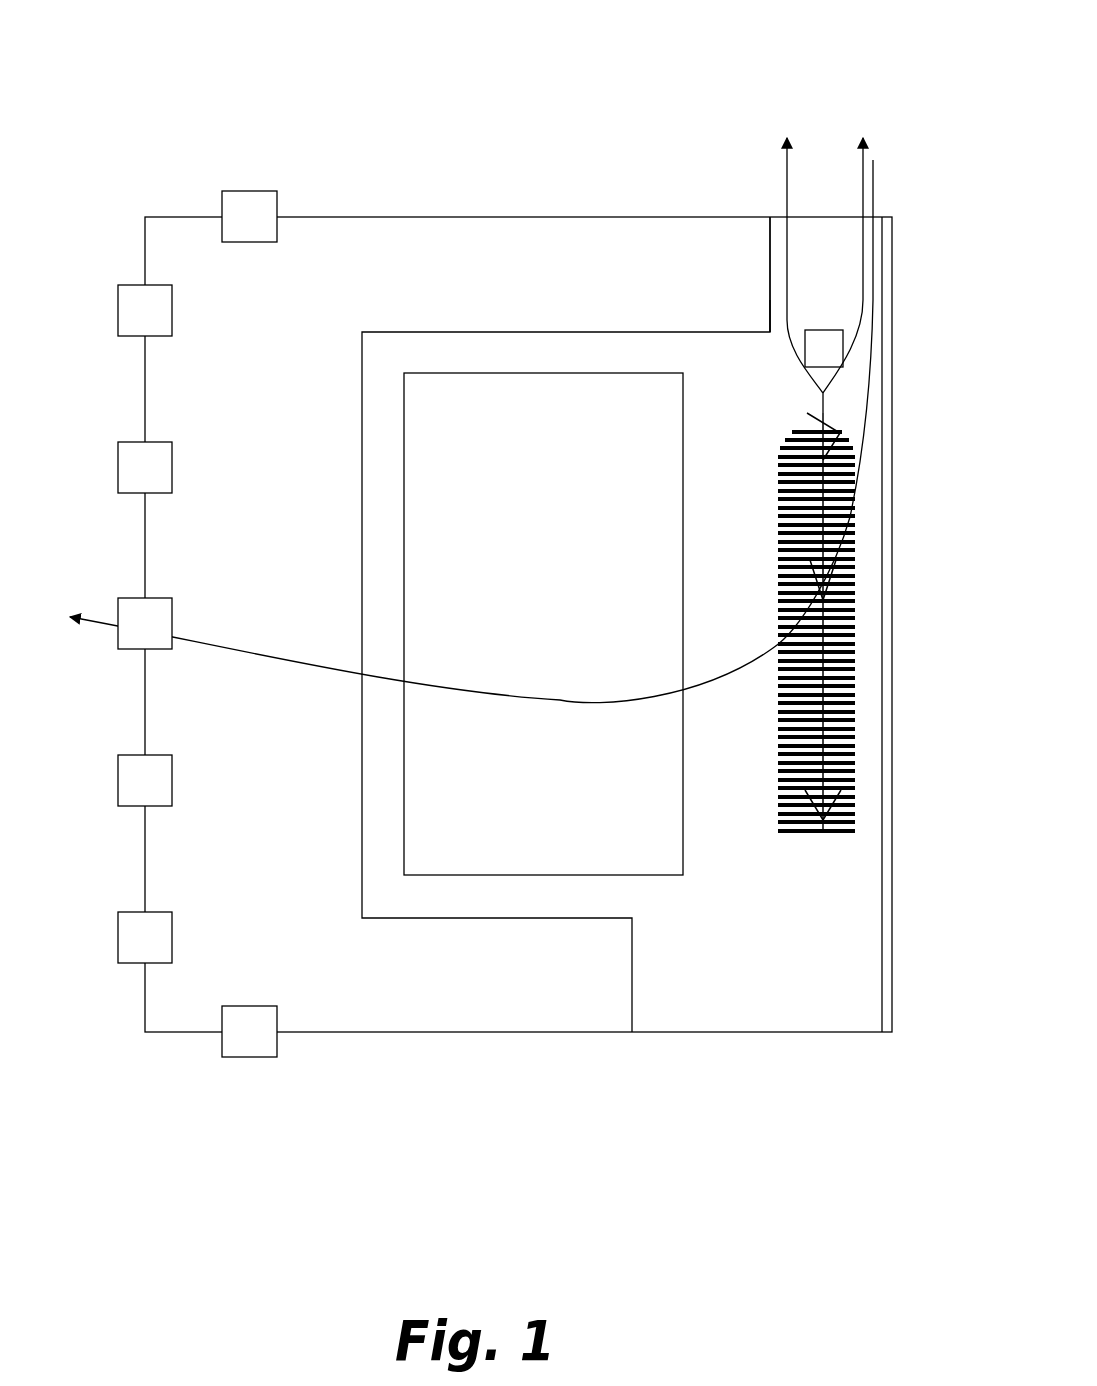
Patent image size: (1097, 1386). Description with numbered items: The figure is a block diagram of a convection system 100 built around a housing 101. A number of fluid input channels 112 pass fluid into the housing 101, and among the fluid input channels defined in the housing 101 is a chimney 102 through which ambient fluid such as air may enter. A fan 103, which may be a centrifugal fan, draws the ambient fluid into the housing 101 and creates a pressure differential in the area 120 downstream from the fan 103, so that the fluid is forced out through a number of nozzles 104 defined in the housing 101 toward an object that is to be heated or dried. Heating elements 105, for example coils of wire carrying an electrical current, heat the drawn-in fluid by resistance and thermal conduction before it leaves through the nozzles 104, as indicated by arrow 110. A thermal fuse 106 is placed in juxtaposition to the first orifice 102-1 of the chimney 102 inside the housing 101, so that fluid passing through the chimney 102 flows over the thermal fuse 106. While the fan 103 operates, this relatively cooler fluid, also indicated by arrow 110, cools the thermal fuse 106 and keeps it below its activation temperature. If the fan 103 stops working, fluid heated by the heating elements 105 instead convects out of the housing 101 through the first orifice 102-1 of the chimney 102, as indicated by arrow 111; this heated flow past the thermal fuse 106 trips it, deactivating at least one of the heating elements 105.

The convection system 100 is at (188, 98).
The housing 101 is at (462, 213).
The chimney 102 is at (813, 235).
The first orifice 102-1 is at (767, 312).
The fan 103 is at (563, 649).
The nozzles 104 is at (247, 220).
The heating elements 105 is at (850, 775).
The thermal fuse 106 is at (830, 345).
The arrow 110 is at (875, 197).
The arrow 111 is at (787, 248).
The fluid input channels 112 is at (741, 980).
The area downstream from the fan 120 is at (265, 790).